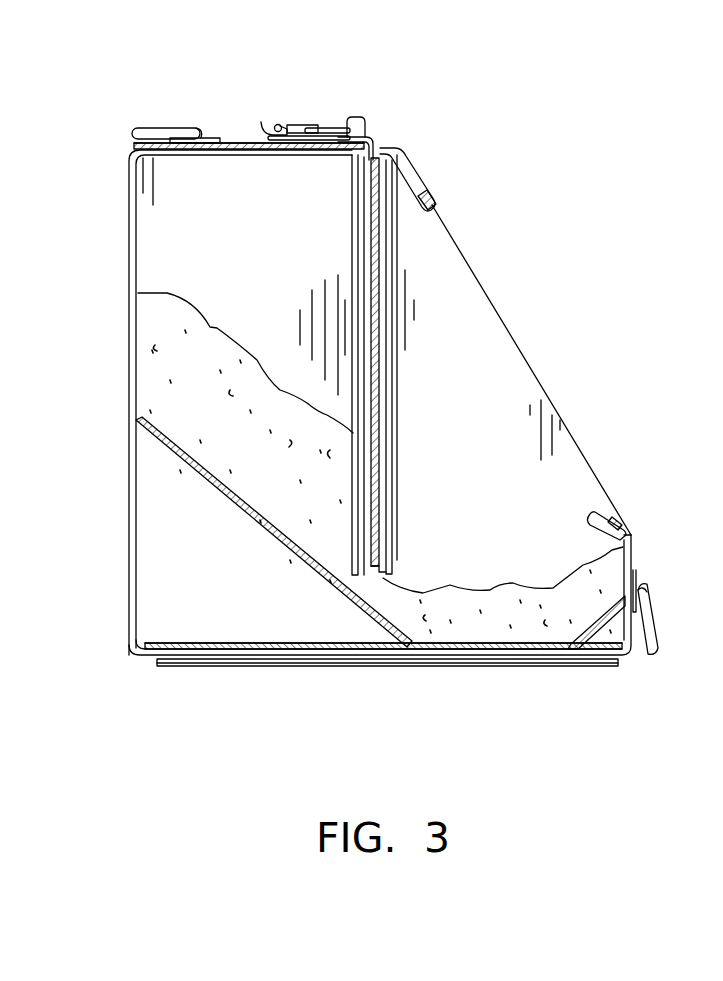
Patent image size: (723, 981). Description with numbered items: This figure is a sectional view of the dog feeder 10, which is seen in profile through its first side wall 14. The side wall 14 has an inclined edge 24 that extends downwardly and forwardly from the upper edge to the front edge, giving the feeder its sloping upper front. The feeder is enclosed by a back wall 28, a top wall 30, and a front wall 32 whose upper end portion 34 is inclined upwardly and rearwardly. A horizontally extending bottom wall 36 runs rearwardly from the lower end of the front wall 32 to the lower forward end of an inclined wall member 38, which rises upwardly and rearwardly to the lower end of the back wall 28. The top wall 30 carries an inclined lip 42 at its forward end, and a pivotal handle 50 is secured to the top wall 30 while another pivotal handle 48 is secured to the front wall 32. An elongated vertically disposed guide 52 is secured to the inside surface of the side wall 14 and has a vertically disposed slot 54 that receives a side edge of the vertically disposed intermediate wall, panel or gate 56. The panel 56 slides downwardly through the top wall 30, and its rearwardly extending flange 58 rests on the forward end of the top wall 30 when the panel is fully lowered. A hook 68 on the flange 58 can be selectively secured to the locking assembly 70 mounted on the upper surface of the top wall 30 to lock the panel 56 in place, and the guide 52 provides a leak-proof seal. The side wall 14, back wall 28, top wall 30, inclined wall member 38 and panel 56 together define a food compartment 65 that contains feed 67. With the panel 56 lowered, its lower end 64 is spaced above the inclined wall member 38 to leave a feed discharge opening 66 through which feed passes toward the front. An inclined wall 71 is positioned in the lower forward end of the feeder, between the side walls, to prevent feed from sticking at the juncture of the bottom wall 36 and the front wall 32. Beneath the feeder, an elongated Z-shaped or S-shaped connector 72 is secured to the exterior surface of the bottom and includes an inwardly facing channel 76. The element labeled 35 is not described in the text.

The dog feeder 10 is at (556, 192).
The first side wall 14 is at (474, 360).
The inclined edge 24 is at (547, 389).
The back wall 28 is at (137, 251).
The top wall 30 is at (252, 152).
The front wall 32 is at (634, 562).
The upper end portion 34 is at (607, 523).
The hinge tube 35 is at (584, 519).
The bottom wall 36 is at (503, 648).
The inclined wall member 38 is at (245, 520).
The inclined lip 42 is at (422, 170).
The pivotal handle 48 is at (655, 622).
The pivotal handle 50 is at (158, 128).
The guide 52 is at (394, 299).
The slot 54 is at (378, 556).
The intermediate wall, panel or gate 56 is at (380, 208).
The flange 58 is at (372, 139).
The lower end 64 is at (385, 580).
The food compartment 65 is at (259, 251).
The feed discharge opening 66 is at (346, 600).
The feed 67 is at (251, 395).
The hook 68 is at (362, 118).
The locking assembly 70 is at (262, 122).
The inclined wall 71 is at (610, 628).
The Z-shaped or S-shaped connector 72 is at (282, 665).
The channel 76 is at (205, 662).